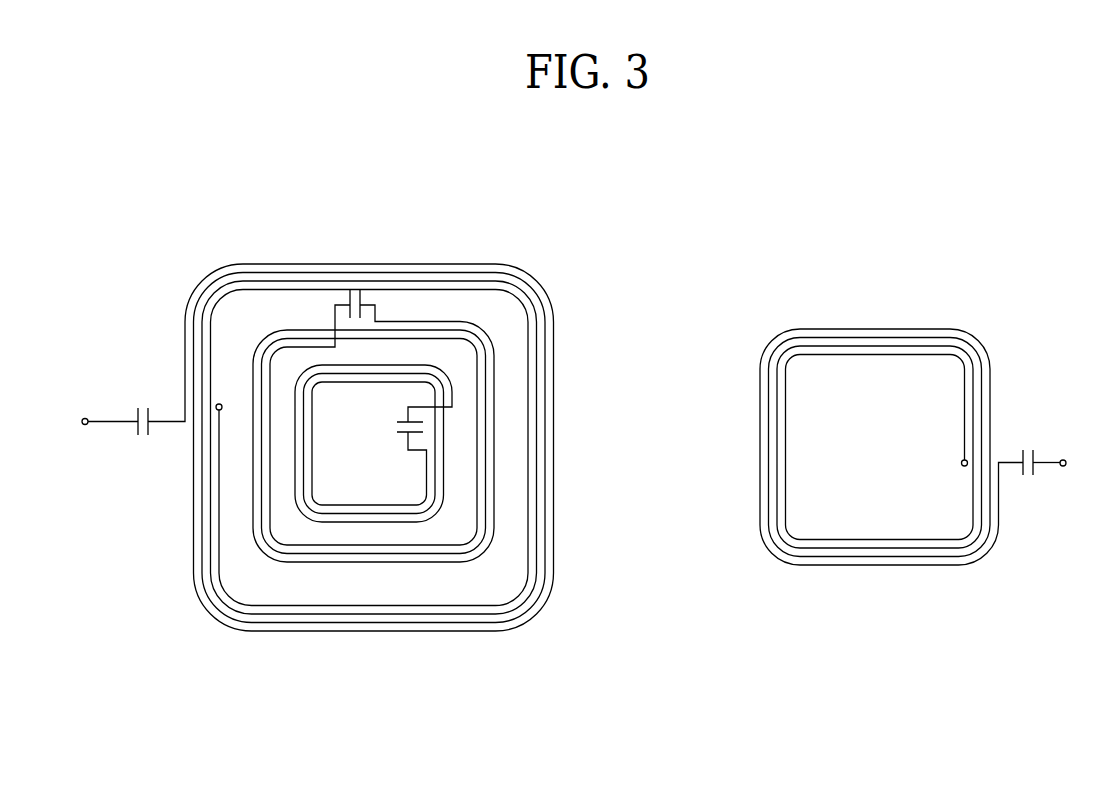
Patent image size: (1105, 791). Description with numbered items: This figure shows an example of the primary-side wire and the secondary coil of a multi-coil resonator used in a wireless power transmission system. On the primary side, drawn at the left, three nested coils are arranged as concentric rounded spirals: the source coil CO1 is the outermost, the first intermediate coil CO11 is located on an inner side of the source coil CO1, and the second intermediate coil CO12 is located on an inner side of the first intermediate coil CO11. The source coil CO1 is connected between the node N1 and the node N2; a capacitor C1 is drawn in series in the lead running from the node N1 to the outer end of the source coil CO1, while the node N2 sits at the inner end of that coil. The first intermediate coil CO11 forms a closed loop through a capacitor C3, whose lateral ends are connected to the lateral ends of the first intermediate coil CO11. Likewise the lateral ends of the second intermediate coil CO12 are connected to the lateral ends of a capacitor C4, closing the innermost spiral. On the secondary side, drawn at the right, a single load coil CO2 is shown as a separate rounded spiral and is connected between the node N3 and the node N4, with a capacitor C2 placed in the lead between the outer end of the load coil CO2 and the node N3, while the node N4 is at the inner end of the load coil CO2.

The source coil CO1 is at (313, 264).
The first intermediate coil CO11 is at (477, 328).
The second intermediate coil CO12 is at (444, 372).
The load coil CO2 is at (877, 328).
The capacitor C1 is at (146, 407).
The capacitor C2 is at (1028, 450).
The capacitor C3 is at (332, 303).
The capacitor C4 is at (395, 428).
The node N1 is at (93, 423).
The node N2 is at (233, 407).
The node N3 is at (1062, 463).
The node N4 is at (950, 467).